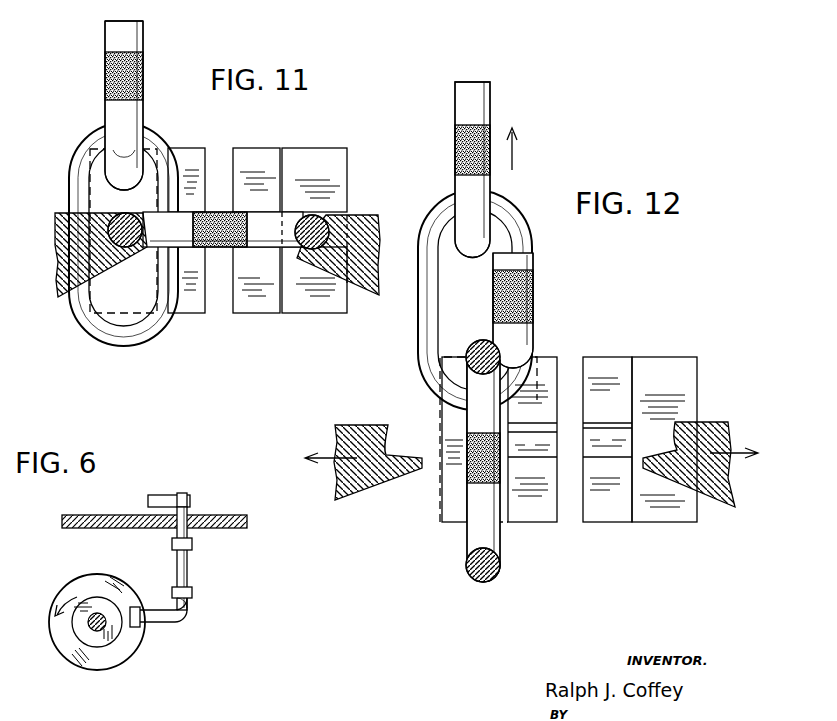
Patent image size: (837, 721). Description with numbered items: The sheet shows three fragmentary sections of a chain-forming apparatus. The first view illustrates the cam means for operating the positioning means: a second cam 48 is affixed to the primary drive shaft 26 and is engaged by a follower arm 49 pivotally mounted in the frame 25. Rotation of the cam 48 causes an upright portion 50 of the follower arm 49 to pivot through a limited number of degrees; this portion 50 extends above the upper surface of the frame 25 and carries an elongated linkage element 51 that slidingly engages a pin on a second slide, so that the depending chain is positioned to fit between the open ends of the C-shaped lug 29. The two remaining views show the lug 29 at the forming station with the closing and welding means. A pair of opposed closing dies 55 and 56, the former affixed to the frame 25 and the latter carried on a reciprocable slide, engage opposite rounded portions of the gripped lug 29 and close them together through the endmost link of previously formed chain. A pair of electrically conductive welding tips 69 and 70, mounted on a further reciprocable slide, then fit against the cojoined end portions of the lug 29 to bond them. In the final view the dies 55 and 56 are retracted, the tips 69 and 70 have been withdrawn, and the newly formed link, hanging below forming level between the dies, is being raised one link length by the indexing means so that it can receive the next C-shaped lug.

In FIG. 6, the frame 25 is at (82, 527).
In FIG. 6, the primary drive shaft 26 is at (97, 631).
In FIG. 11, the C-shaped lug 29 is at (120, 110).
In FIG. 12, the C-shaped lug 29 is at (478, 207).
In FIG. 6, the second cam 48 is at (93, 583).
In FIG. 6, the follower arm 49 is at (160, 620).
In FIG. 6, the upright portion 50 is at (188, 570).
In FIG. 6, the elongated linkage element 51 is at (165, 500).
In FIG. 11, the closing die 55 is at (362, 216).
In FIG. 12, the closing die 55 is at (703, 437).
In FIG. 11, the closing die 56 is at (68, 214).
In FIG. 12, the closing die 56 is at (367, 433).
In FIG. 11, the welding tip 69 is at (268, 300).
In FIG. 12, the welding tip 69 is at (605, 503).
In FIG. 11, the welding tip 70 is at (198, 302).
In FIG. 12, the welding tip 70 is at (537, 507).